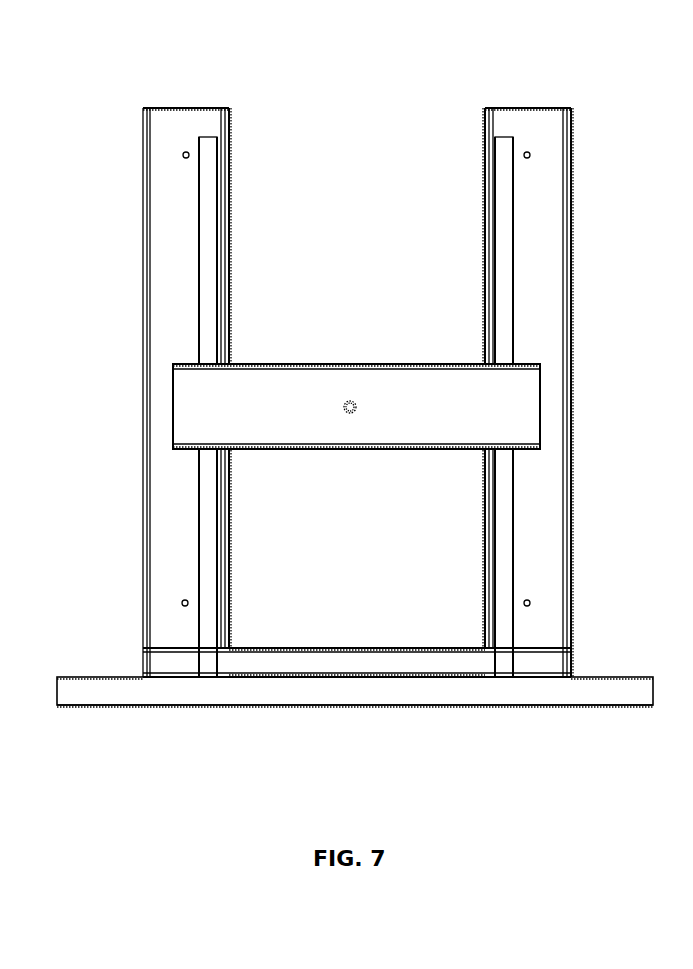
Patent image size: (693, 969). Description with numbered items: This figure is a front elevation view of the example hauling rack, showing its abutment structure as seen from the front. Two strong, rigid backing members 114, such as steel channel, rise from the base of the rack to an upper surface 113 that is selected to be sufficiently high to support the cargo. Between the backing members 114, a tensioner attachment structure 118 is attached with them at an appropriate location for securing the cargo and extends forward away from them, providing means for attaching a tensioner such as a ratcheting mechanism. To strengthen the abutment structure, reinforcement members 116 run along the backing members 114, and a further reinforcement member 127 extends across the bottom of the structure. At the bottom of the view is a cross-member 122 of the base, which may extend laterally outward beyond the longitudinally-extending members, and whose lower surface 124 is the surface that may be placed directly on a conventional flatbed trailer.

The upper surface 113 is at (185, 108).
The backing members 114 is at (170, 282).
The reinforcement members 116 is at (207, 260).
The tensioner attachment structure 118 is at (297, 402).
The cross-members 122 is at (388, 690).
The lower surface 124 is at (202, 705).
The reinforcement member 127 is at (305, 665).